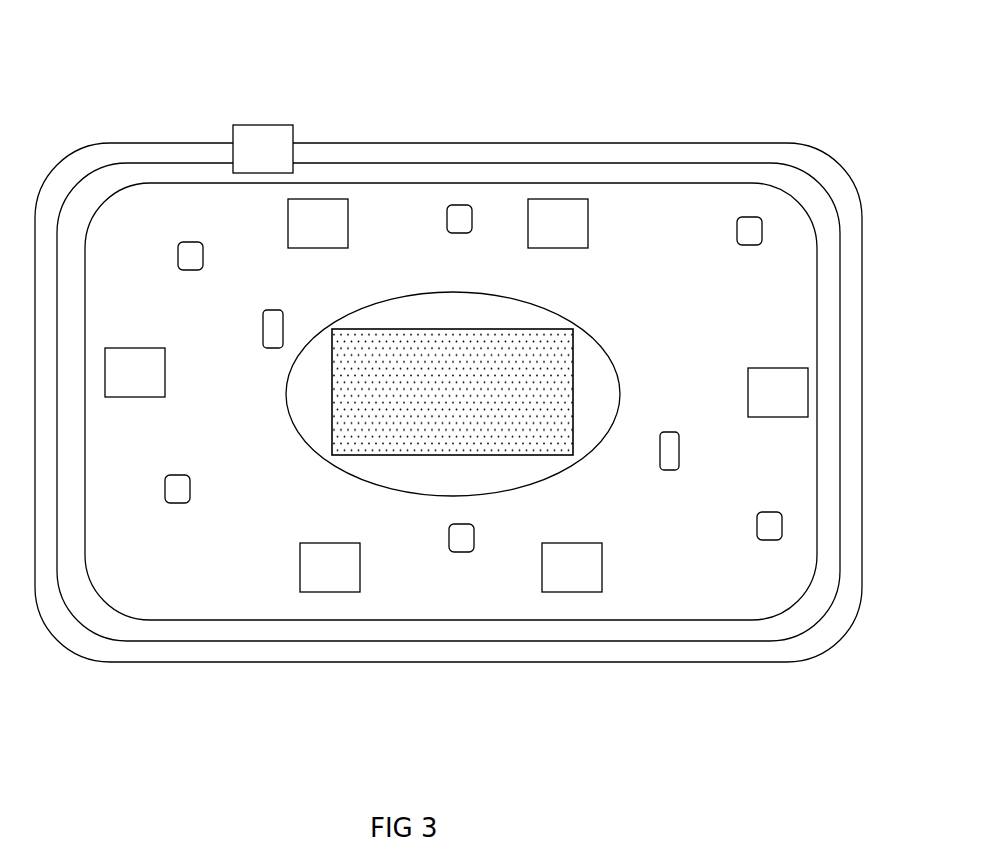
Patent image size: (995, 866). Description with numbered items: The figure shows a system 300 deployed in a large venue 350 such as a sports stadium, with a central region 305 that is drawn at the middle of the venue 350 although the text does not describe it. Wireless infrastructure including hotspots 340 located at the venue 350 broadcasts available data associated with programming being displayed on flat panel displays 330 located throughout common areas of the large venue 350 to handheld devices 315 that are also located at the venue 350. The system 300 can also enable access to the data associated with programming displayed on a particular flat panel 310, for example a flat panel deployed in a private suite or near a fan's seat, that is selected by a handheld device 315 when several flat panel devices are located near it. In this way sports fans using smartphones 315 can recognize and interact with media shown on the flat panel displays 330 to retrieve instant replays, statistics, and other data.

The system 300 is at (622, 88).
The display / touch region 305 is at (452, 392).
The particular flat panel 310 is at (263, 149).
The handheld device 315 is at (273, 340).
The flat panel display 330 is at (456, 395).
The hotspot 340 is at (455, 220).
The large venue 350 is at (178, 258).